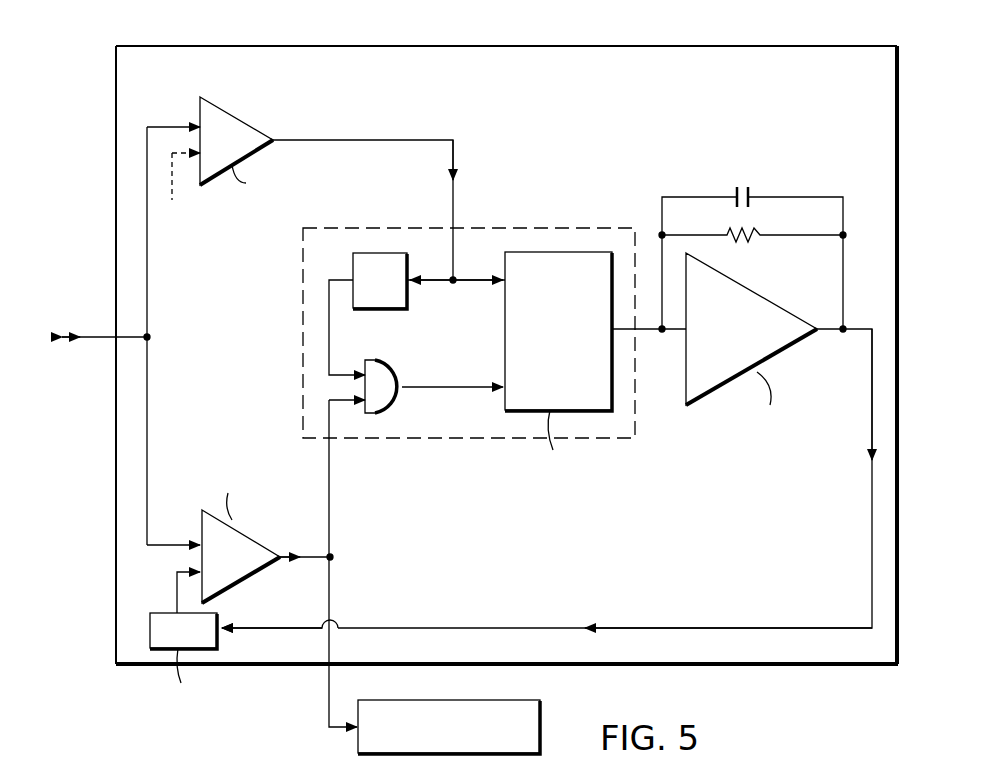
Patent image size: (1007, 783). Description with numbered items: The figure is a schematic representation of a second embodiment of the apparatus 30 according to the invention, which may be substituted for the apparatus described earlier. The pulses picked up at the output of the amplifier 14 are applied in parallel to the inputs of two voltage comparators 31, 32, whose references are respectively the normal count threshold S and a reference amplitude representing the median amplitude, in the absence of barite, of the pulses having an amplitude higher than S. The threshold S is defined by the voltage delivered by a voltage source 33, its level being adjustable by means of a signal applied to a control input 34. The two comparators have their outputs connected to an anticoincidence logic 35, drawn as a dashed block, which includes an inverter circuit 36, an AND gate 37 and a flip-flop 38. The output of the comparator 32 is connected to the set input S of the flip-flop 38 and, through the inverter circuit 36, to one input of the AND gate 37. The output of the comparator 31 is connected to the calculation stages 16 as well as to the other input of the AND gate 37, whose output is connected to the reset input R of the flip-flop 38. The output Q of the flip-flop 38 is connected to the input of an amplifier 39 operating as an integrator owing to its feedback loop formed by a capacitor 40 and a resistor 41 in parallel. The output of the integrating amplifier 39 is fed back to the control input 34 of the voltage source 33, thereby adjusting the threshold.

The amplifier 14 is at (98, 328).
The calculation stages 16 is at (449, 727).
The apparatus 30 is at (460, 46).
The voltage comparator 31 is at (213, 543).
The voltage comparator 32 is at (249, 160).
The voltage source 33 is at (183, 667).
The control input 34 is at (222, 622).
The anticoincidence logic 35 is at (480, 228).
The inverter circuit 36 is at (395, 308).
The AND gate 37 is at (398, 405).
The flip-flop 38 is at (558, 361).
The amplifier 39 is at (751, 347).
The capacitor 40 is at (735, 192).
The resistor 41 is at (748, 240).